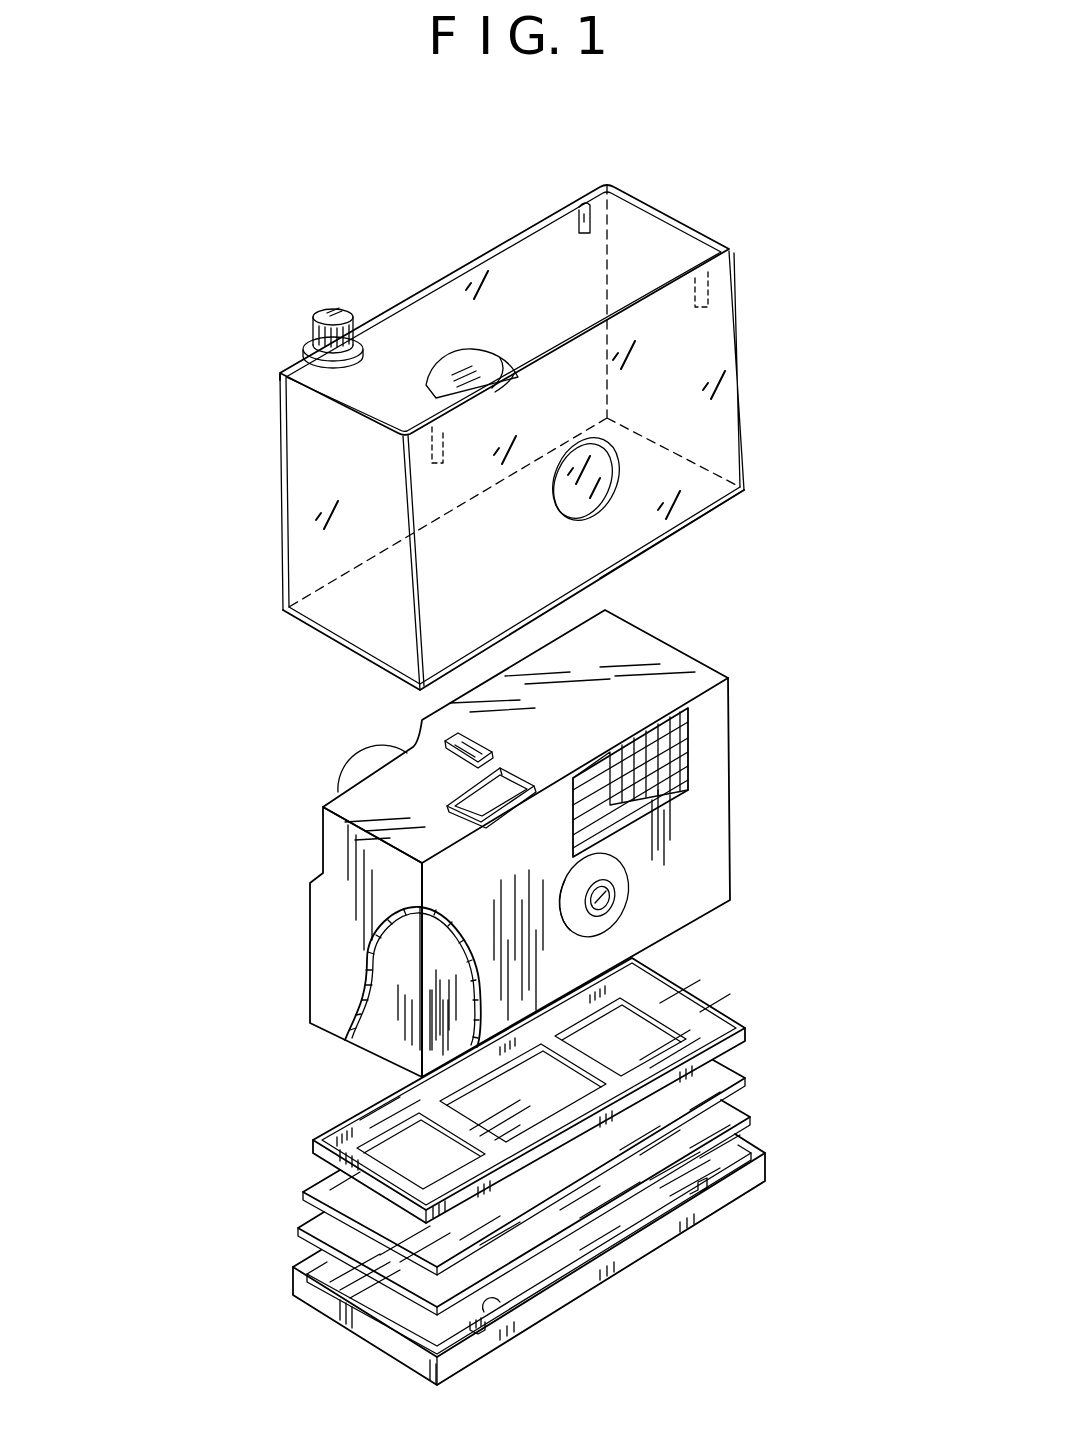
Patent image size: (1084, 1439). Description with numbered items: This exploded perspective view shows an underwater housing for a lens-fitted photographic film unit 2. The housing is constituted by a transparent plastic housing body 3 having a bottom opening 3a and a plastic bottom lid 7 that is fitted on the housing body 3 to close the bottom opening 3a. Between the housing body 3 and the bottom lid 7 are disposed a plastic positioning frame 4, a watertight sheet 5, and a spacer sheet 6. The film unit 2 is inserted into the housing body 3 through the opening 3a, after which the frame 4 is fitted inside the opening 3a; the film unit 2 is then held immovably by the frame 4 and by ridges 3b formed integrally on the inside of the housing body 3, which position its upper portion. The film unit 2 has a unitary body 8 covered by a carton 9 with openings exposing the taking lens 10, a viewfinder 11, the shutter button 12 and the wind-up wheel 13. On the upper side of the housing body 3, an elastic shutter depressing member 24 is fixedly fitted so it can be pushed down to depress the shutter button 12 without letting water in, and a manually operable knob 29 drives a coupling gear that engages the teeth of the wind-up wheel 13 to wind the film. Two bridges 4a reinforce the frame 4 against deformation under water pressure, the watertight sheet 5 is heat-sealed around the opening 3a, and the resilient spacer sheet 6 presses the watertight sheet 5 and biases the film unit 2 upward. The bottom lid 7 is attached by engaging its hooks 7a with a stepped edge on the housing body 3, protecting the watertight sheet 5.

The lens-fitted photographic film unit 2 is at (696, 652).
The housing body 3 is at (684, 214).
The bottom opening 3a is at (736, 504).
The ridges 3b is at (566, 208).
The positioning frame 4 is at (736, 1008).
The bridges 4a is at (590, 1058).
The watertight sheet 5 is at (745, 1064).
The spacer sheet 6 is at (741, 1107).
The bottom lid 7 is at (678, 1240).
The hooks 7a is at (507, 1315).
The unitary body 8 is at (385, 1045).
The carton 9 is at (340, 992).
The taking lens 10 is at (617, 887).
The viewfinder 11 is at (668, 755).
The shutter button 12 is at (492, 797).
The wind-up wheel 13 is at (354, 766).
The shutter depressing member 24 is at (489, 356).
The operable knob 29 is at (322, 310).